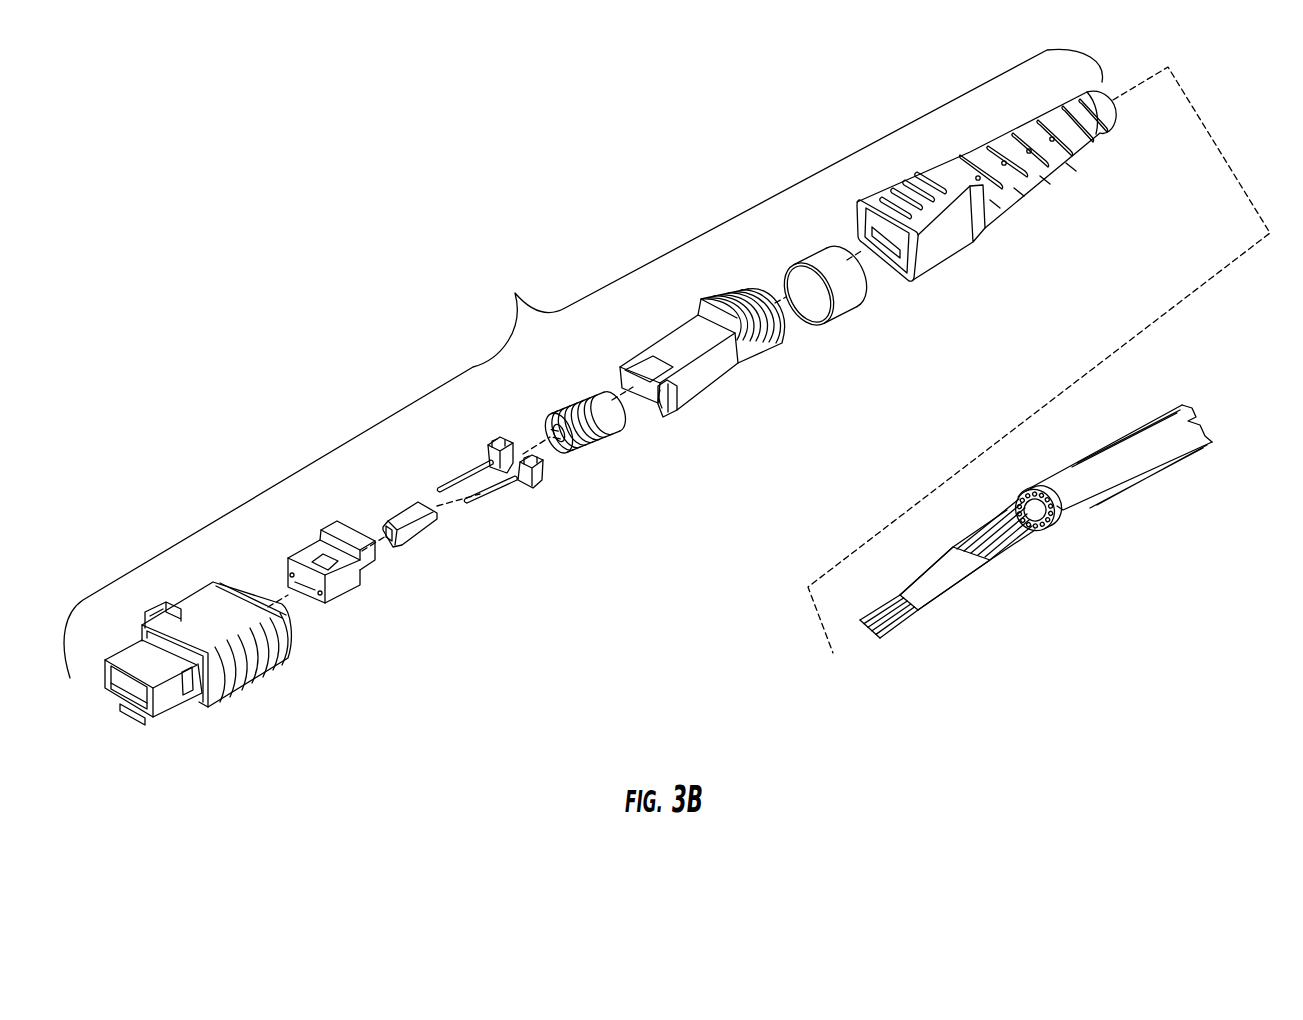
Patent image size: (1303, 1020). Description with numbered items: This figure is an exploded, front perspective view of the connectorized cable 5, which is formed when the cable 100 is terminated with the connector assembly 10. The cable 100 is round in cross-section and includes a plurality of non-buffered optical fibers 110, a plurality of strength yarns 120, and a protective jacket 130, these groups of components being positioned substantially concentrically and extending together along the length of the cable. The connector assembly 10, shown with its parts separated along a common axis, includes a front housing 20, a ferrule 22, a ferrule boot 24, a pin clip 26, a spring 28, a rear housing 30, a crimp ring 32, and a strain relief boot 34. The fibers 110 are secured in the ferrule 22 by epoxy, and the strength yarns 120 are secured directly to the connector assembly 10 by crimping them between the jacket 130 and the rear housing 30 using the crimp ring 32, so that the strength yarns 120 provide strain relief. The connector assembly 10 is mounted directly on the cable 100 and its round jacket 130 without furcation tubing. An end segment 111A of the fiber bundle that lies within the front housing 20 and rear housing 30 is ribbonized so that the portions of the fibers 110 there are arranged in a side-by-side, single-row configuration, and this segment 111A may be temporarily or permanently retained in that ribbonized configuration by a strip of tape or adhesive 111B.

The connectorized cable 5 is at (448, 336).
The connector assembly 10 is at (555, 397).
The front housing 20 is at (226, 711).
The ferrule 22 is at (352, 607).
The ferrule boot 24 is at (437, 542).
The pin clip 26 is at (545, 497).
The spring 28 is at (612, 446).
The rear housing 30 is at (730, 393).
The crimp ring 32 is at (862, 326).
The strain relief boot 34 is at (982, 261).
The cable 100 is at (1017, 564).
The non-buffered optical fibers 110 is at (882, 604).
The end segment 111A is at (947, 612).
The strip of tape or adhesive 111B is at (928, 574).
The strength yarns 120 is at (1060, 517).
The protective jacket 130 is at (1143, 462).